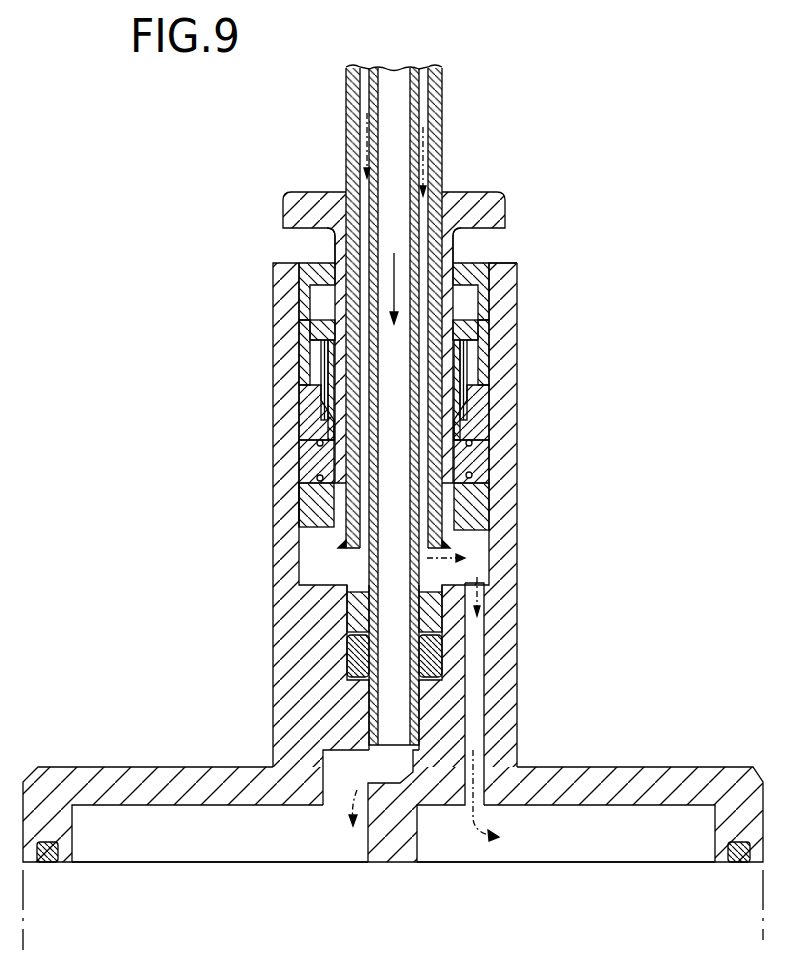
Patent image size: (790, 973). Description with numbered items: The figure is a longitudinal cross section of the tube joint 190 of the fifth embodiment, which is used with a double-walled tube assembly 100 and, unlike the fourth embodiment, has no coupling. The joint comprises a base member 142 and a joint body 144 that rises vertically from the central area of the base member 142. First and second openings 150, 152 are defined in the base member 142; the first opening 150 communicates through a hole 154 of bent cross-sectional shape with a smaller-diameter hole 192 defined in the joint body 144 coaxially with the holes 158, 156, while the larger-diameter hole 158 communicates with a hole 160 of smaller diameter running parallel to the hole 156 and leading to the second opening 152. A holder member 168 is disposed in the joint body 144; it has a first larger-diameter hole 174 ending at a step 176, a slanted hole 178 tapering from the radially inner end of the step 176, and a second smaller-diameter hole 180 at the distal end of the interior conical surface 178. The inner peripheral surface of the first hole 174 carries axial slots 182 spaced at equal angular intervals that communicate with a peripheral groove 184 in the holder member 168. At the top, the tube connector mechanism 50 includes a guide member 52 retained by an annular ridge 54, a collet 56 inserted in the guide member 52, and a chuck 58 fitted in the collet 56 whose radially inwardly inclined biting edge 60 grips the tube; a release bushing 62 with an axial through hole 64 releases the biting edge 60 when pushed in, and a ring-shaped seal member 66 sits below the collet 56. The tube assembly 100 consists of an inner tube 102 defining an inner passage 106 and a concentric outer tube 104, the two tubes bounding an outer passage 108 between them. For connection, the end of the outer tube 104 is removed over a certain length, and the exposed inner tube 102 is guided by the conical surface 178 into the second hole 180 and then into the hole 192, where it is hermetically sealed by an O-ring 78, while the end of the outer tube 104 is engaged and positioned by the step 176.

The tube connector mechanism 50 is at (509, 182).
The guide member 52 is at (478, 277).
The annular ridge 54 is at (493, 311).
The collet 56 is at (478, 337).
The chuck 58 is at (483, 388).
The biting edge 60 is at (483, 434).
The release bushing 62 is at (463, 198).
The axial through hole 64 is at (340, 246).
The seal member 66 is at (312, 462).
The O-ring 78 is at (350, 668).
The double-walled tube assembly 100 is at (445, 97).
The inner tube 102 is at (417, 65).
The outer tube 104 is at (355, 111).
The inner passage 106 is at (393, 83).
The outer passage 108 is at (368, 67).
The base member 142 is at (641, 764).
The joint body 144 is at (522, 479).
The first opening 150 is at (265, 842).
The second opening 152 is at (622, 845).
The hole 154 is at (343, 792).
The hole 156 is at (432, 620).
The hole 158 is at (490, 368).
The hole 160 is at (477, 680).
The holder member 168 is at (296, 503).
The first larger-diameter hole 174 is at (340, 517).
The step 176 is at (330, 540).
The slanted hole 178 is at (425, 566).
The second smaller-diameter hole 180 is at (350, 620).
The axial slots 182 is at (453, 510).
The peripheral groove 184 is at (478, 547).
The tube joint 190 is at (596, 288).
The smaller-diameter hole 192 is at (372, 712).